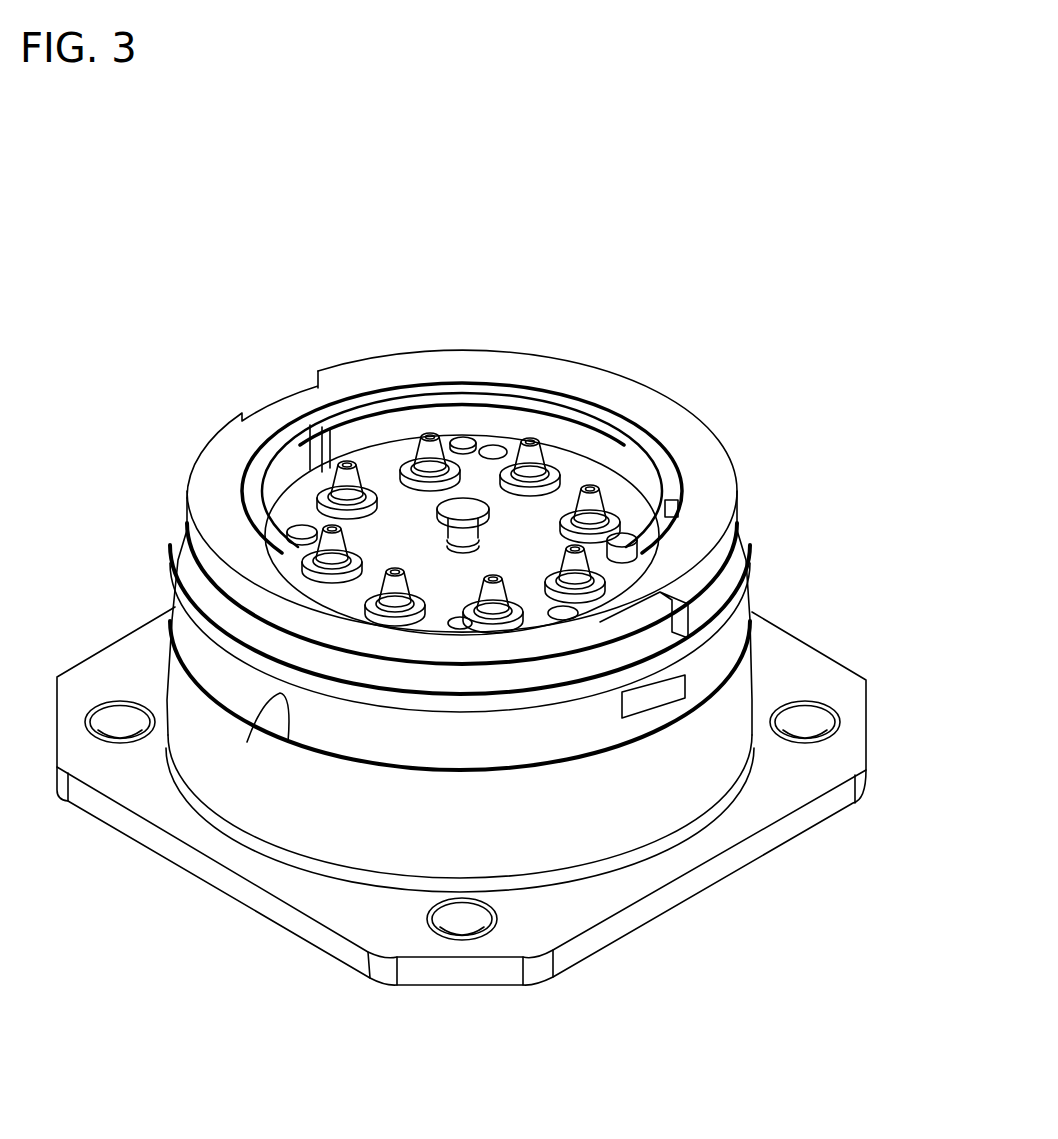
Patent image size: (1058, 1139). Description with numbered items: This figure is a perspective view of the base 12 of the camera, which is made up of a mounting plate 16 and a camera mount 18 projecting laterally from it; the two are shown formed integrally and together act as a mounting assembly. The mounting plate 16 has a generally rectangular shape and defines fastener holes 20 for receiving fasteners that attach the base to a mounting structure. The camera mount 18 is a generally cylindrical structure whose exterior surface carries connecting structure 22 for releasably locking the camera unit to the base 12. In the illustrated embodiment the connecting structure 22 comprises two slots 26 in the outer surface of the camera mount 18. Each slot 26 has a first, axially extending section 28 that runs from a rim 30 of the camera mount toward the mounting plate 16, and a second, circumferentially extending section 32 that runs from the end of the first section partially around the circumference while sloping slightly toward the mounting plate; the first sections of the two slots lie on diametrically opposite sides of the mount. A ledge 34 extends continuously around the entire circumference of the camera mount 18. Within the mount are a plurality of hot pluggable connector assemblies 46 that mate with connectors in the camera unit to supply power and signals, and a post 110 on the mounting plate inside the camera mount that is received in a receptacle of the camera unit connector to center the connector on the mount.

The base 12 is at (618, 275).
The mounting plate 16 is at (232, 887).
The camera mount 18 is at (617, 812).
The fastener holes 20 is at (113, 720).
The connecting structure 22 is at (517, 715).
The slots 26 is at (276, 405).
The first section 28 is at (647, 618).
The rim 30 is at (478, 358).
The second section 32 is at (355, 700).
The ledge 34 is at (282, 693).
The connector assemblies 46 is at (427, 440).
The post 110 is at (460, 506).